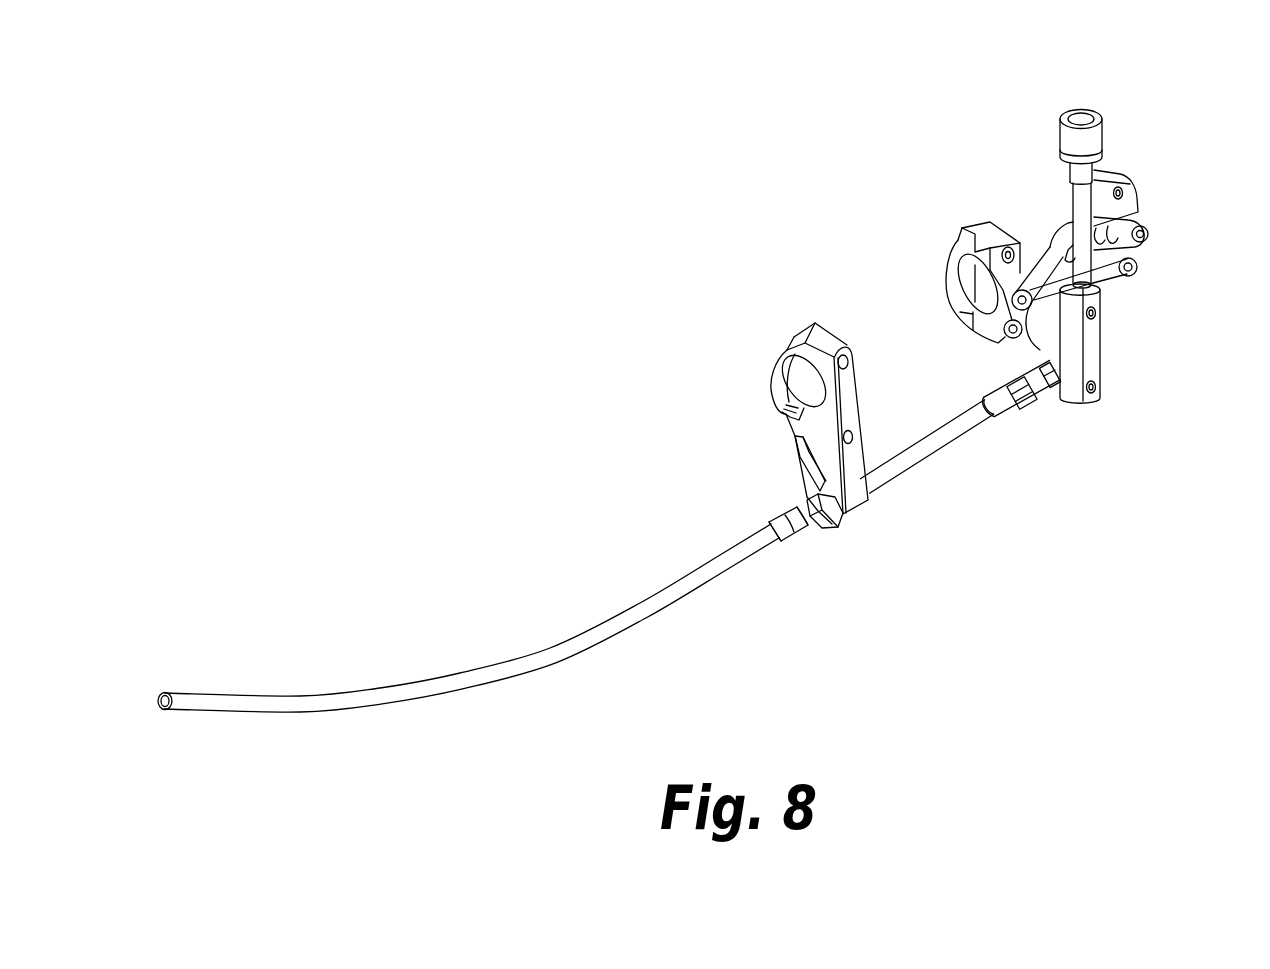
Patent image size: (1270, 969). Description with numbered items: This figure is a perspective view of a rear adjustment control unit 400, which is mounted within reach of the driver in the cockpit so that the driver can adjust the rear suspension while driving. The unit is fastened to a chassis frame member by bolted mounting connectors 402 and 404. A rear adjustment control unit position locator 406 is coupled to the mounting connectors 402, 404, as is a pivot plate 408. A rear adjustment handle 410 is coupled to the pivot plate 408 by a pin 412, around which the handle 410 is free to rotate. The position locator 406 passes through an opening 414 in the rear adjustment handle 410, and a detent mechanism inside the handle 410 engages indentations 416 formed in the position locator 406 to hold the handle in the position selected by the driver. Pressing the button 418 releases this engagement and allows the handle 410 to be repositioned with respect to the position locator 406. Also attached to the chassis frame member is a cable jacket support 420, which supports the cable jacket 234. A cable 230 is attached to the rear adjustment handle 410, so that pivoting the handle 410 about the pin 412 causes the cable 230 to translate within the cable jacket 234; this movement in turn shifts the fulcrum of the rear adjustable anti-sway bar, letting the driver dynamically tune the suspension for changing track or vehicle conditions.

The rear adjustment control unit 400 is at (706, 127).
The cable jacket 234 is at (612, 633).
The cable jacket support 420 is at (780, 430).
The cable 230 is at (1003, 407).
The button 418 is at (1088, 117).
The rear adjustment handle 410 is at (1100, 363).
The pin 412 is at (1100, 312).
The mounting connector 404 is at (1113, 172).
The rear adjustment control unit position locator 406 is at (1137, 220).
The pivot plate 408 is at (1117, 277).
The mounting connector 402 is at (970, 230).
The opening 414 is at (1060, 228).
The indentations 416 is at (1040, 347).